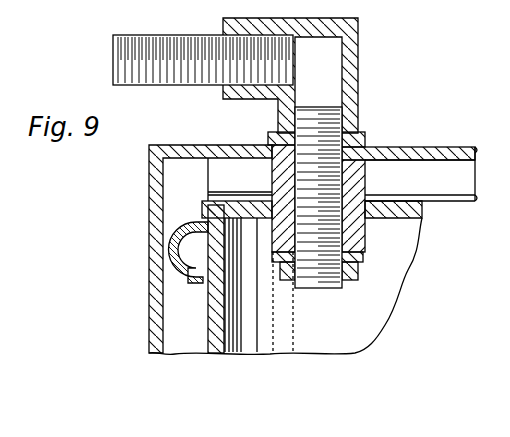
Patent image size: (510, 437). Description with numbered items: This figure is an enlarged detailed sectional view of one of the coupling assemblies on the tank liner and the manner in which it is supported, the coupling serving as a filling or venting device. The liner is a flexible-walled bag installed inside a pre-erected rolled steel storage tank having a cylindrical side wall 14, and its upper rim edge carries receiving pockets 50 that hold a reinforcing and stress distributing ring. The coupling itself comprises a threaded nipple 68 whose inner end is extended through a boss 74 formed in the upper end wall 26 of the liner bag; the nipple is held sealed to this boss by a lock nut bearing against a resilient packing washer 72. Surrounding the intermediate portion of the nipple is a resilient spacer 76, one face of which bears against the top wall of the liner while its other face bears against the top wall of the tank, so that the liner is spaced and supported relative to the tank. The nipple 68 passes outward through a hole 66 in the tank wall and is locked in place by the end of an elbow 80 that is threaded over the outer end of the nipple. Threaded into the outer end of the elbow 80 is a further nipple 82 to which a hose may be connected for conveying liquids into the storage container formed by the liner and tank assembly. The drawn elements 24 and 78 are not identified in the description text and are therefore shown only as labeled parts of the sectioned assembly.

The cylindrical side wall 14 is at (151, 357).
The vertical plate member 24 is at (218, 357).
The upper end wall of the tank liner bag 26 is at (418, 216).
The receiving pockets 50 is at (196, 272).
The hole in the tank wall 66 is at (292, 150).
The threaded nipple 68 is at (301, 128).
The resilient packing washer 72 is at (359, 266).
The boss 74 is at (281, 234).
The resilient spacer 76 is at (366, 177).
The flange 78 is at (360, 141).
The elbow 80 is at (358, 62).
The nipple 82 is at (138, 50).